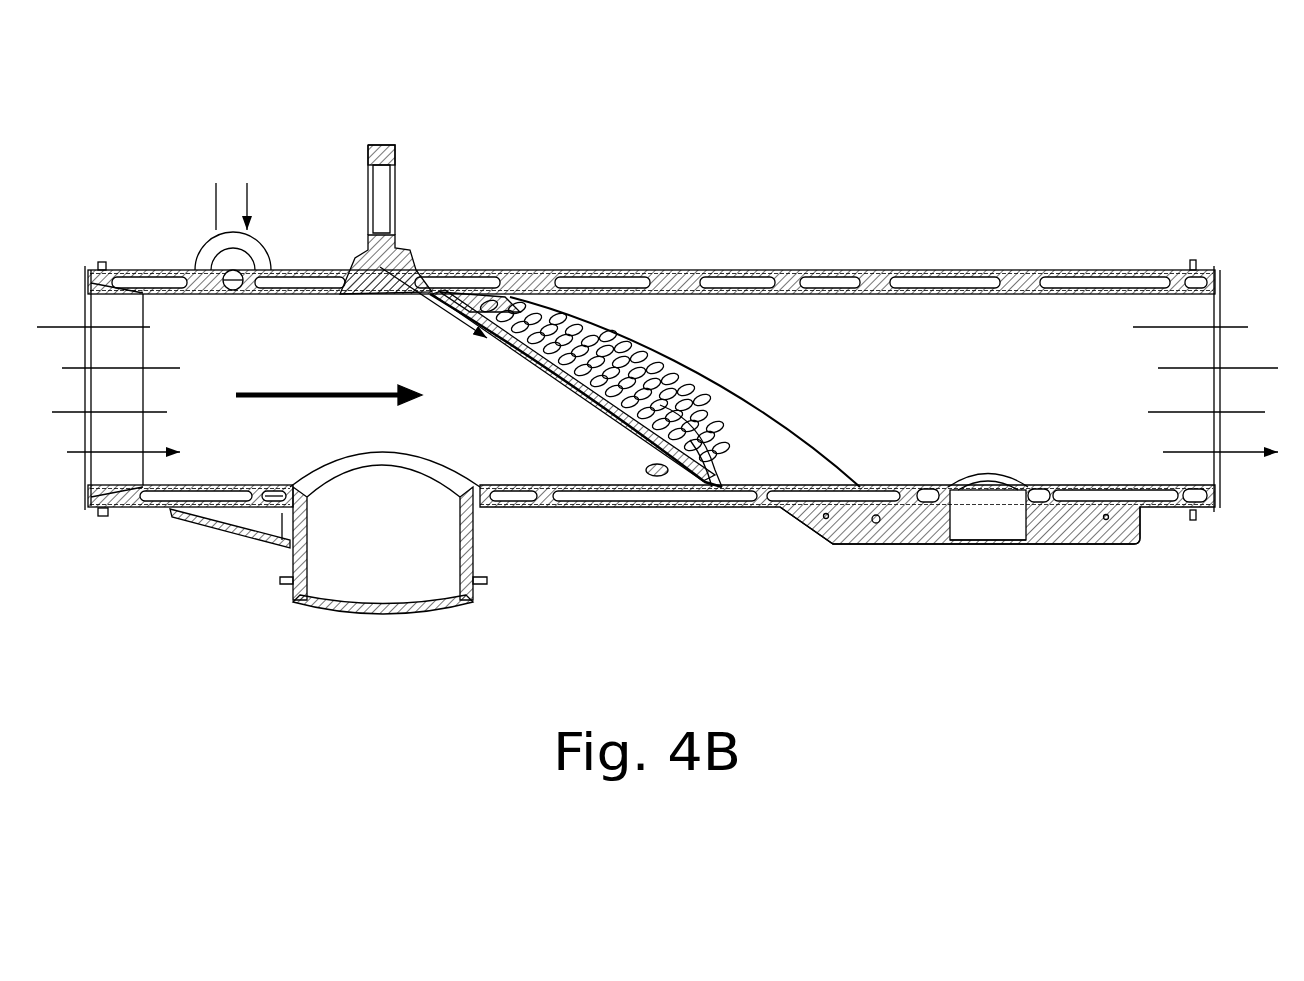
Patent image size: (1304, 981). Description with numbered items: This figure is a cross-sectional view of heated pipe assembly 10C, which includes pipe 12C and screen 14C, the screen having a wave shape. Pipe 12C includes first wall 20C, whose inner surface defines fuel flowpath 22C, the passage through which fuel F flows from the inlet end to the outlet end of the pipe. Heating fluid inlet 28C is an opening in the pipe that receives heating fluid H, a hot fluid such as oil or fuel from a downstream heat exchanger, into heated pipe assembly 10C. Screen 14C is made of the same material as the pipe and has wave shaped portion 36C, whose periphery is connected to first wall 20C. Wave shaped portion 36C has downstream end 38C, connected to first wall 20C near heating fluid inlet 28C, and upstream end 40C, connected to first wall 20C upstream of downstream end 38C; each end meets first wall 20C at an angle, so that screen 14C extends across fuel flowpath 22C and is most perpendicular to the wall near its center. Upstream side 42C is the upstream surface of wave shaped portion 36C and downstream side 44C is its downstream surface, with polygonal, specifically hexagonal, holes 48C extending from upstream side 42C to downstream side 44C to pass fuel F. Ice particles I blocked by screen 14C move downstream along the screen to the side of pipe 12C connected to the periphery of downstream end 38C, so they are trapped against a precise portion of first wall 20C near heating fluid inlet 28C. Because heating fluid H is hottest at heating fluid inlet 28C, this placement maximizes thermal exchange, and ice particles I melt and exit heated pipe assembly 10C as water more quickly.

The heated pipe assembly 10C is at (120, 158).
The pipe 12C is at (543, 540).
The screen 14C is at (413, 310).
The first wall 20C is at (727, 290).
The fuel flowpath 22C is at (329, 382).
The heating fluid inlet 28C is at (200, 282).
The wave shaped portion 36C is at (618, 350).
The downstream end 38C is at (806, 462).
The upstream end 40C is at (468, 300).
The upstream side 42C is at (588, 405).
The downstream side 44C is at (735, 430).
The holes 48C is at (723, 452).
The heating fluid H is at (231, 192).
The fuel F is at (657, 389).
The ice particles I is at (660, 478).